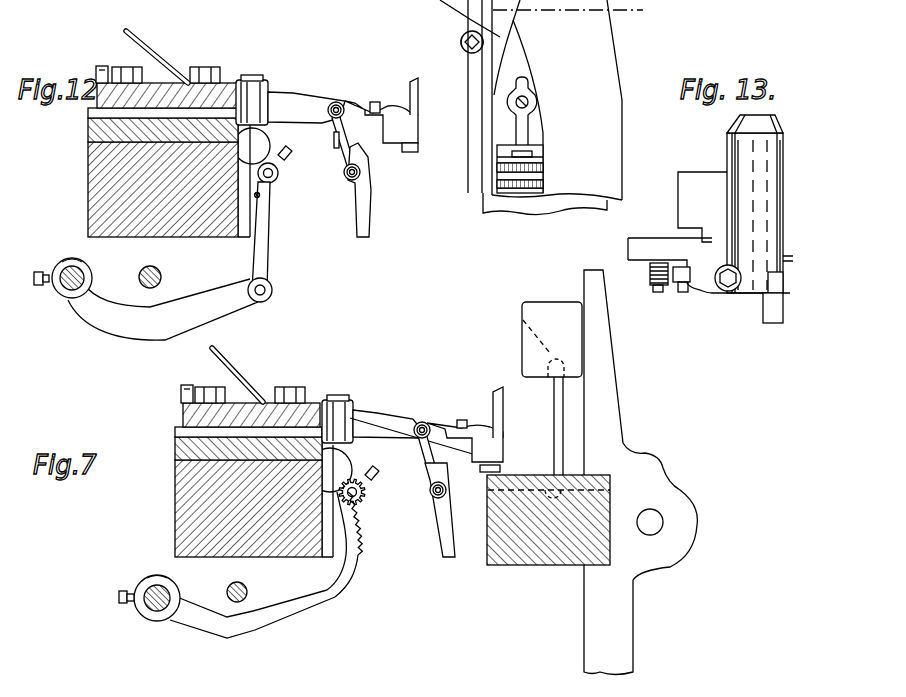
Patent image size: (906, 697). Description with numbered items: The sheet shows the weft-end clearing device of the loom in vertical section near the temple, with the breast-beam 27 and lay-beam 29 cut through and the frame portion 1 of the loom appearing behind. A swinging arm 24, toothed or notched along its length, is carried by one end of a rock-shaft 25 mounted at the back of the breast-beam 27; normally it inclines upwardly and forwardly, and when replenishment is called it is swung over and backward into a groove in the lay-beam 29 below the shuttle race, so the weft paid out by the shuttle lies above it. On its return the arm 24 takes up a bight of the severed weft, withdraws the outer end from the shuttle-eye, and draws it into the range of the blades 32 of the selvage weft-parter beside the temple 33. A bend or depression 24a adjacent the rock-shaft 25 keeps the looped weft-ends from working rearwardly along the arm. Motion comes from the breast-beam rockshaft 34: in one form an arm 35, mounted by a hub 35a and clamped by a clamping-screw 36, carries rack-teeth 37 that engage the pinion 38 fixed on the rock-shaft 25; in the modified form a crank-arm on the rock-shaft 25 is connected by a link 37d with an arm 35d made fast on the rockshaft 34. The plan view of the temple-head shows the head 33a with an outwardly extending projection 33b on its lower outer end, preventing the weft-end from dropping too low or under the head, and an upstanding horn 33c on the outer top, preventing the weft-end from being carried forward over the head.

In FIG. 12, the machine frame / lever 1 is at (537, 123).
In FIG. 12, the swinging arm 24 is at (141, 34).
In FIG. 7, the swinging arm 24 is at (243, 368).
In FIG. 12, the bend or depression 24a is at (252, 140).
In FIG. 7, the bend or depression 24a is at (335, 463).
In FIG. 12, the rock-shaft 25 is at (270, 178).
In FIG. 7, the rock-shaft 25 is at (358, 503).
In FIG. 12, the breast-beam 27 is at (88, 205).
In FIG. 7, the breast-beam 27 is at (175, 507).
In FIG. 7, the lay-beam 29 is at (523, 548).
In FIG. 12, the blades of the selvage weft-parter 32 is at (420, 120).
In FIG. 13, the blades of the selvage weft-parter 32 is at (787, 255).
In FIG. 7, the blades of the selvage weft-parter 32 is at (505, 430).
In FIG. 12, the temple 33 is at (297, 100).
In FIG. 7, the temple 33 is at (385, 417).
In FIG. 13, the head of temple 33a is at (777, 207).
In FIG. 12, the outwardly extending projection 33b is at (408, 152).
In FIG. 13, the outwardly extending projection 33b is at (776, 320).
In FIG. 7, the outwardly extending projection 33b is at (487, 470).
In FIG. 12, the upstanding horn 33c is at (416, 87).
In FIG. 13, the upstanding horn 33c is at (777, 281).
In FIG. 7, the upstanding horn 33c is at (493, 400).
In FIG. 12, the breast-beam rockshaft 34 is at (65, 291).
In FIG. 7, the breast-beam rockshaft 34 is at (150, 612).
In FIG. 7, the arm 35 is at (260, 630).
In FIG. 12, the hub 35a is at (84, 262).
In FIG. 7, the hub 35a is at (167, 577).
In FIG. 12, the arm 35d is at (130, 330).
In FIG. 12, the clamping-screw 36 is at (37, 271).
In FIG. 7, the clamping-screw 36 is at (117, 597).
In FIG. 7, the rack-teeth 37 is at (365, 540).
In FIG. 12, the link 37d is at (251, 263).
In FIG. 12, the pinion 38 is at (270, 184).
In FIG. 7, the pinion 38 is at (368, 490).